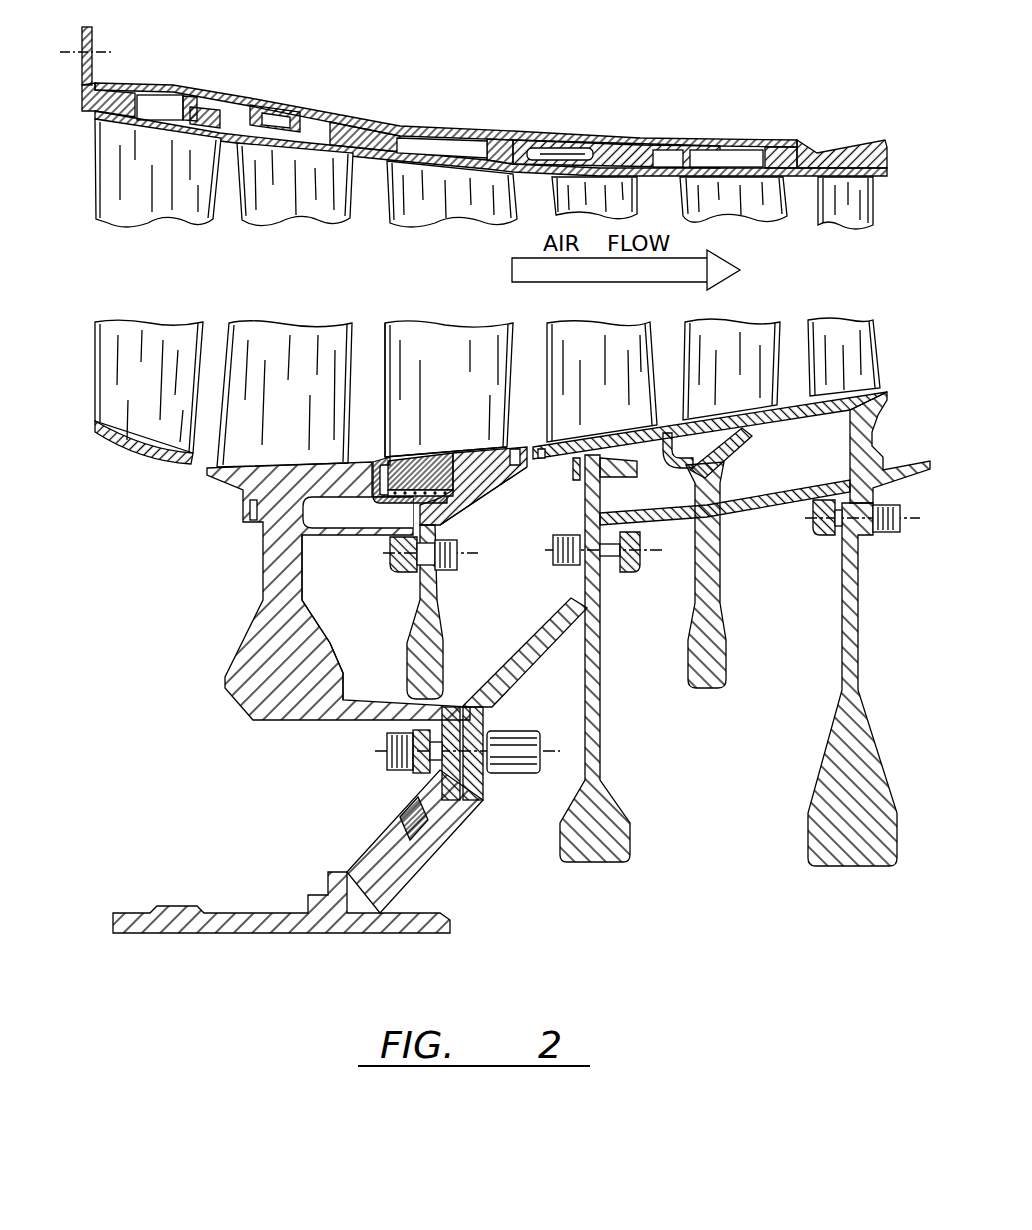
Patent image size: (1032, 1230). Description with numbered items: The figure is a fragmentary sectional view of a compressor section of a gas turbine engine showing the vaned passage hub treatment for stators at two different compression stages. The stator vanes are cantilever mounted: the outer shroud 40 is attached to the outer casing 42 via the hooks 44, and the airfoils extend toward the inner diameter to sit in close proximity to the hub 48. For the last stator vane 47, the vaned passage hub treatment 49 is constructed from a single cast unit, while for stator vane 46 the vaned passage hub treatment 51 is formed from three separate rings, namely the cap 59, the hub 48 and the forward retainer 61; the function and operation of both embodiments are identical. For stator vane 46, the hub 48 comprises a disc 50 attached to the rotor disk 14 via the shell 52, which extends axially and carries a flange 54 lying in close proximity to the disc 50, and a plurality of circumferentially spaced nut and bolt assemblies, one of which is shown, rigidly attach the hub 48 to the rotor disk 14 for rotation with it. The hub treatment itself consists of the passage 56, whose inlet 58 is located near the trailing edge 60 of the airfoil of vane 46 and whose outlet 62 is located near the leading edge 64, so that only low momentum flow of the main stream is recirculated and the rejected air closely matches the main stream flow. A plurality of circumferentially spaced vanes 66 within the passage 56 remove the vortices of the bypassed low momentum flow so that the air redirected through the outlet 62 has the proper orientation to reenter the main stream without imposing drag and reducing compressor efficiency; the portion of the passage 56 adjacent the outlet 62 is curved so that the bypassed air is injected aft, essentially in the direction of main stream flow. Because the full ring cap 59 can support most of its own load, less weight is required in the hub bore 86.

The rotor disk 14 is at (240, 643).
The outer shroud 40 is at (520, 143).
The outer casing 42 is at (240, 103).
The hooks 44 is at (380, 120).
The stator vane 46 is at (470, 393).
The last stator vane 47 is at (741, 318).
The hub 48 is at (460, 487).
The vaned passage hub treatment 49 is at (737, 460).
The disc 50 is at (437, 607).
The vaned passage hub treatment 51 is at (512, 548).
The shell 52 is at (330, 535).
The flange 54 is at (450, 540).
The passage 56 is at (500, 467).
The inlet 58 is at (480, 447).
The cap 59 is at (430, 457).
The trailing edge 60 is at (520, 340).
The forward retainer 61 is at (357, 500).
The outlet 62 is at (378, 458).
The leading edge 64 is at (370, 340).
The vanes 66 is at (460, 500).
The hub bore 86 is at (447, 700).